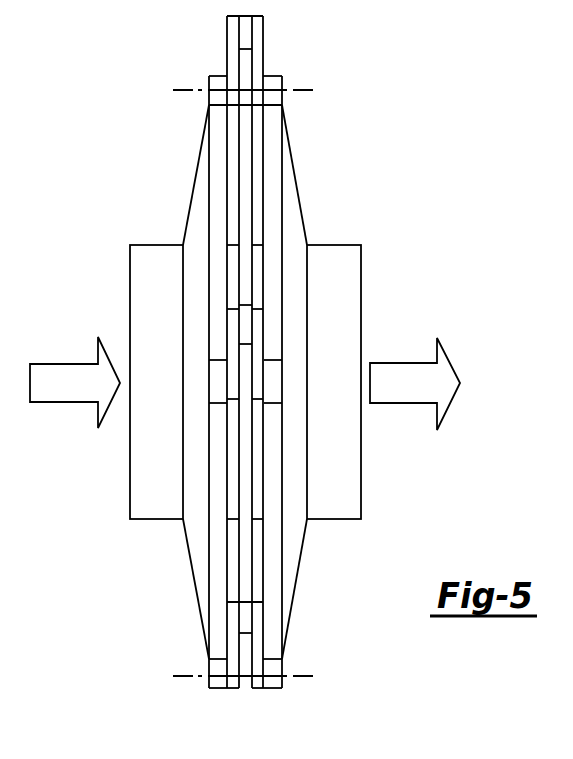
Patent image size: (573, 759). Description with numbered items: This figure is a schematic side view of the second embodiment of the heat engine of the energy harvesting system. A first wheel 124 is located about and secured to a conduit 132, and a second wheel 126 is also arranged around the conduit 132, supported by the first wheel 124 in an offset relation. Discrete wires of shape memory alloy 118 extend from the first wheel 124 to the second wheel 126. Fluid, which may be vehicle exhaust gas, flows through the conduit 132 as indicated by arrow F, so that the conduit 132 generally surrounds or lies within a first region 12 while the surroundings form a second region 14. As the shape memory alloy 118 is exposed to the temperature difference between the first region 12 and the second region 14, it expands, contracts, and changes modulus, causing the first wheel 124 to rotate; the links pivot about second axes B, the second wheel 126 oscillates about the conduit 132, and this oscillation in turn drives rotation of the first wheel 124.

The first region 12 is at (360, 282).
The second region 14 is at (165, 221).
The shape memory alloy 118 is at (233, 137).
The first wheel 124 is at (290, 550).
The second wheel 126 is at (245, 33).
The conduit 132 is at (160, 521).
The arrow indicating fluid flow F is at (63, 403).
The second axes B is at (305, 91).